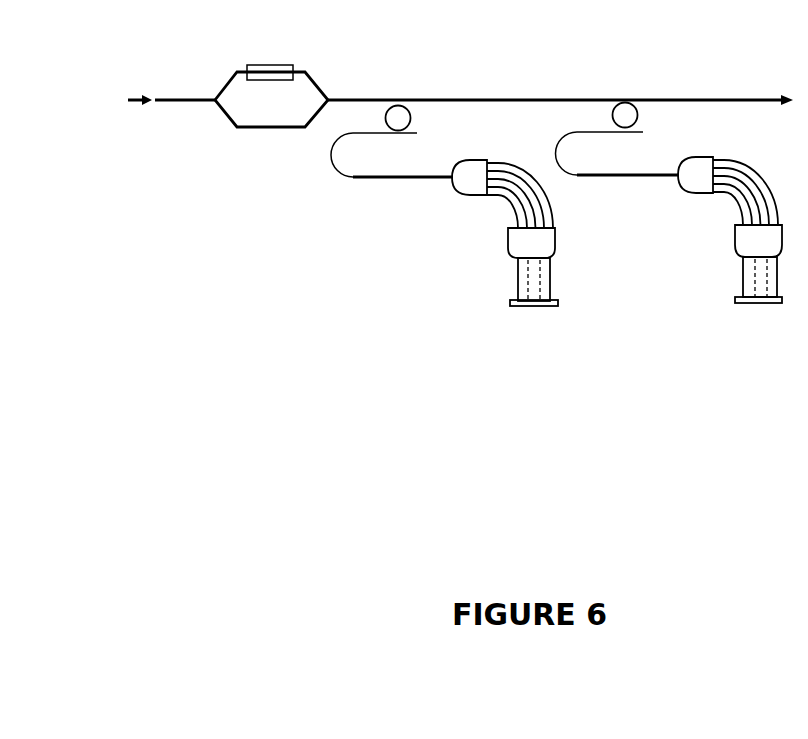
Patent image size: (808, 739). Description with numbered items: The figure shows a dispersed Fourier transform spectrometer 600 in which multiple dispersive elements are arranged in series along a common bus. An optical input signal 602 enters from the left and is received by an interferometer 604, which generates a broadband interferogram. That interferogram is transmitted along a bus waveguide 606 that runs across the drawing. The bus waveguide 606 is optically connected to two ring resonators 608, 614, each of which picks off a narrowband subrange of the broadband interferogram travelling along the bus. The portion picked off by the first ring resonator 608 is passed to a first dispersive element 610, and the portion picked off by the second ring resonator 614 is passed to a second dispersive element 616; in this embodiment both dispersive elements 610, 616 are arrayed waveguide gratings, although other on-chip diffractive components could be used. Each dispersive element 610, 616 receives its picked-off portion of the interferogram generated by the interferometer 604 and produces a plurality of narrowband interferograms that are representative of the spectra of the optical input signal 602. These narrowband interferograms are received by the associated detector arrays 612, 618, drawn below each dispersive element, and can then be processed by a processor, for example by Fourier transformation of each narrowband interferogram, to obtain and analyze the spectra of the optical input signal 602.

The spectrometer 600 is at (203, 254).
The optical input signal 602 is at (172, 98).
The interferometer 604 is at (315, 82).
The bus waveguide 606 is at (447, 98).
The ring resonator 608 is at (397, 113).
The dispersive element 610 is at (473, 173).
The detector array 612 is at (540, 302).
The ring resonator 614 is at (622, 113).
The dispersive element 616 is at (693, 182).
The detector array 618 is at (743, 298).